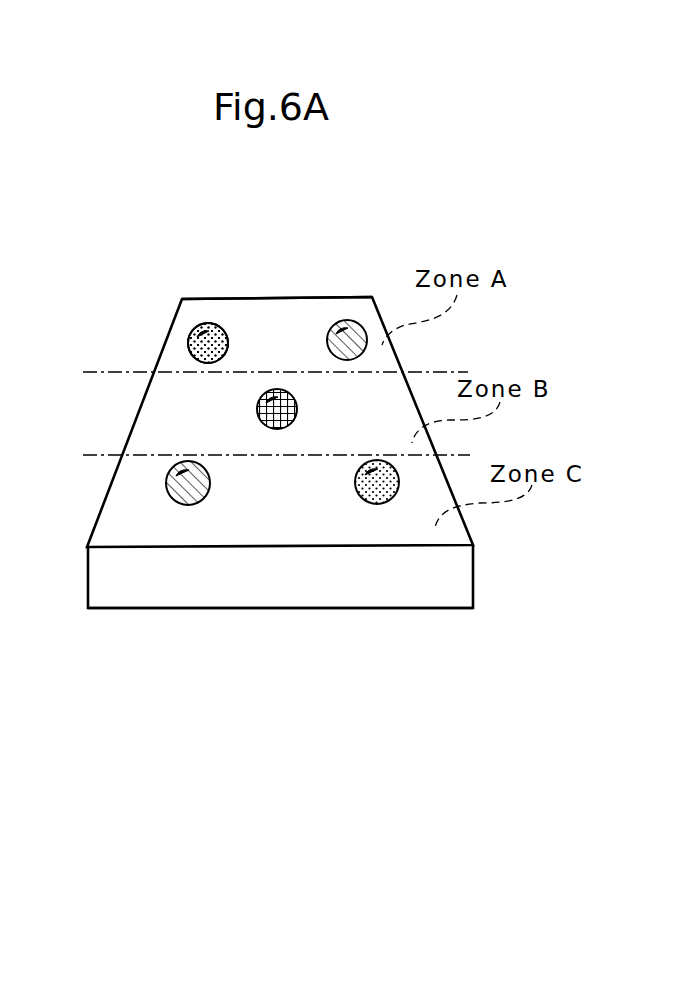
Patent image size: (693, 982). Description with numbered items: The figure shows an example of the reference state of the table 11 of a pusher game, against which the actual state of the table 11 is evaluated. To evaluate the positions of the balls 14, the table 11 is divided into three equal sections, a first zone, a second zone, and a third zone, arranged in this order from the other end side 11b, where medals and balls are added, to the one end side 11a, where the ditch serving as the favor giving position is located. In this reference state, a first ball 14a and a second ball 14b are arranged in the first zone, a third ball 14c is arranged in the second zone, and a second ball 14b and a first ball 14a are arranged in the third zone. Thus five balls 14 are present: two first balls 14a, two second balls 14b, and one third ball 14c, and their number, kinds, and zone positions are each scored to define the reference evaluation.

The table 11 is at (185, 317).
The one end side of the table 11a is at (290, 633).
The other end side of the table 11b is at (337, 275).
The balls 14 is at (213, 320).
The first ball 14a is at (220, 327).
The second ball 14b is at (360, 325).
The third ball 14c is at (297, 405).